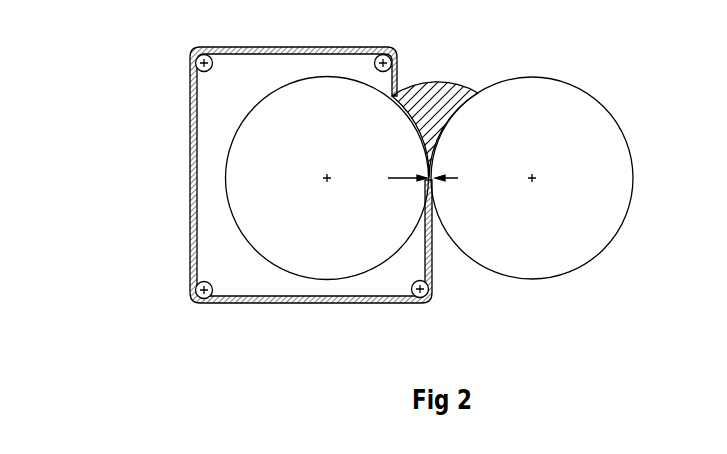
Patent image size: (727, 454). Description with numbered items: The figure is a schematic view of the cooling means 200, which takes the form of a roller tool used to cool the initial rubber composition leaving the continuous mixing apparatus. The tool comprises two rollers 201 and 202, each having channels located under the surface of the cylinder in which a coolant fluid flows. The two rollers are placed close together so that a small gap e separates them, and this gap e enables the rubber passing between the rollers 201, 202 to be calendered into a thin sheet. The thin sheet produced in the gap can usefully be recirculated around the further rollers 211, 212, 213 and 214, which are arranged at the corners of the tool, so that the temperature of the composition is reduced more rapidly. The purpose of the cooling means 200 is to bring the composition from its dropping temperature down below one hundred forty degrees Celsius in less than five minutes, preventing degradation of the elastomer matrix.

The cooling means 200 is at (158, 204).
The roller 201 is at (585, 120).
The roller 202 is at (250, 120).
The roller 211 is at (430, 300).
The roller 212 is at (195, 300).
The roller 213 is at (195, 52).
The roller 214 is at (418, 40).
The gap e is at (423, 168).